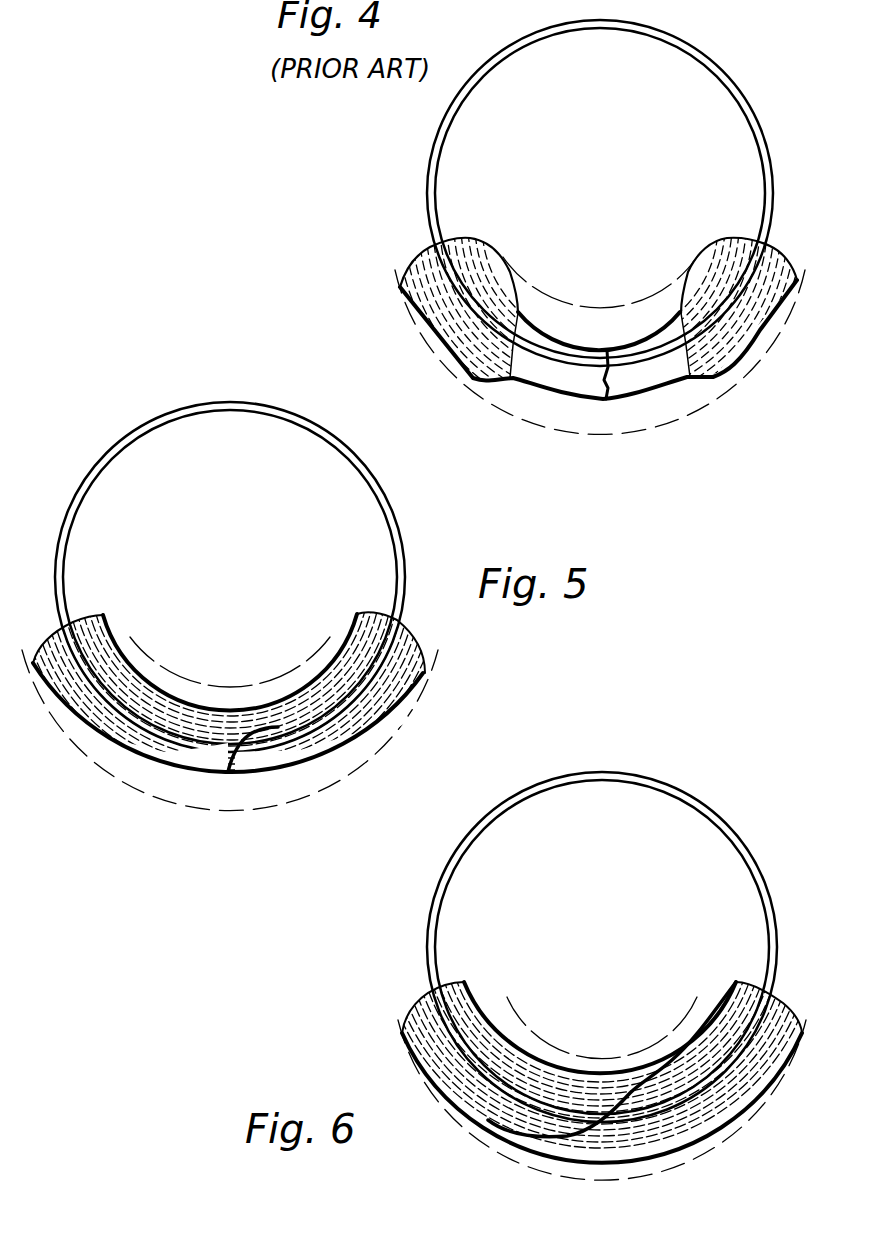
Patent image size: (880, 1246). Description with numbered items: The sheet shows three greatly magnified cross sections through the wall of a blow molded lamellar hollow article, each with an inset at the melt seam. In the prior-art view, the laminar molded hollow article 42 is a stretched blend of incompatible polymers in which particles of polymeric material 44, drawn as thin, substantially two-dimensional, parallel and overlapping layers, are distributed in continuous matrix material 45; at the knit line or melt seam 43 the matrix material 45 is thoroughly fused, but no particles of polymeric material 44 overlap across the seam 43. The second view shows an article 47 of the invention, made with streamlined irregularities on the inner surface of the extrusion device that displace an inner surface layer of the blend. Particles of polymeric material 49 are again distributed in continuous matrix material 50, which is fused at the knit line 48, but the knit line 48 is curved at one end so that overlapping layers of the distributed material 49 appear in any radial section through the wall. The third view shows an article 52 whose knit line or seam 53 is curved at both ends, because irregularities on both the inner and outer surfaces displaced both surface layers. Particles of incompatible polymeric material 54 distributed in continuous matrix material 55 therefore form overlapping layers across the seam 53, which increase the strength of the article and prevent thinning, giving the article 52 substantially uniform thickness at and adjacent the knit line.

In FIG. 4, the laminar molded hollow article 42 is at (713, 63).
In FIG. 4, the knit line or melt seam 43 is at (617, 377).
In FIG. 4, the particles of polymeric material 44 is at (437, 302).
In FIG. 4, the continuous matrix material 45 is at (573, 378).
In FIG. 5, the laminar molded hollow article 47 is at (400, 543).
In FIG. 5, the knit line or melt seam 48 is at (242, 760).
In FIG. 5, the particles of polymeric material 49 is at (133, 723).
In FIG. 5, the continuous matrix material 50 is at (207, 762).
In FIG. 6, the laminar molded hollow article 52 is at (737, 833).
In FIG. 6, the knit line or seam 53 is at (583, 1137).
In FIG. 6, the particles of incompatible polymeric material 54 is at (447, 1047).
In FIG. 6, the continuous matrix material 55 is at (497, 1117).